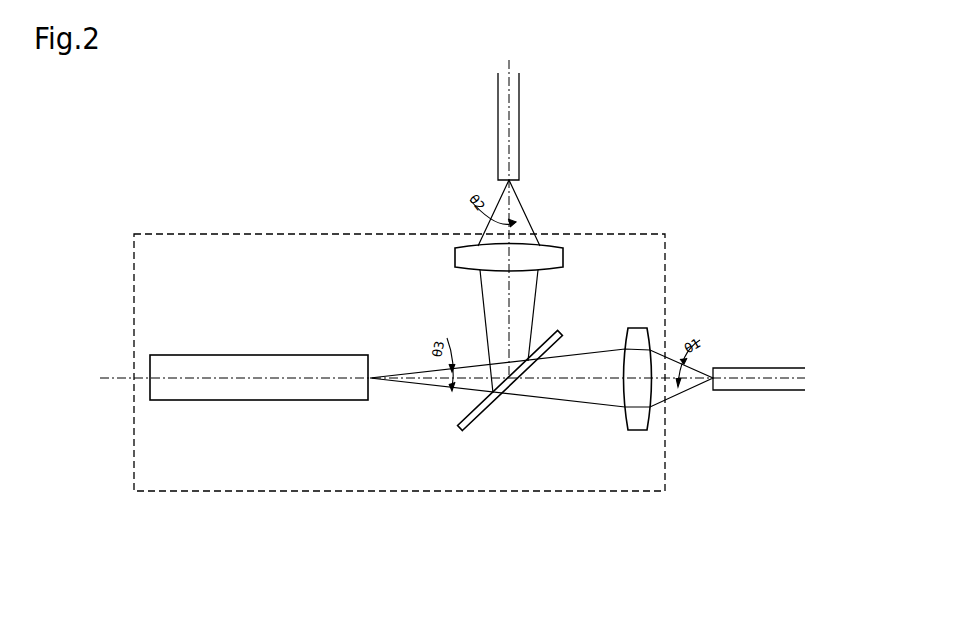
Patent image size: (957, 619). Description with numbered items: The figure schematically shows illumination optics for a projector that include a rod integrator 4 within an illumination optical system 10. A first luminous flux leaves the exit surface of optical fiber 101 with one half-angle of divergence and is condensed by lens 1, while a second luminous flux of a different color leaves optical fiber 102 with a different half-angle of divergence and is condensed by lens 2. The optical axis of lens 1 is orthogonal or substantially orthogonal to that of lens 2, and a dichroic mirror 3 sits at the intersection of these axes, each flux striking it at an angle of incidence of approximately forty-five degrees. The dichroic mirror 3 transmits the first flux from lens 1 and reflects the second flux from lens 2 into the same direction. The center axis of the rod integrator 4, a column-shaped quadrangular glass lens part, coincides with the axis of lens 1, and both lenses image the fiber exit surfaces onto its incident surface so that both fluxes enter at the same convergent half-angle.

The lens 1 is at (643, 430).
The lens 2 is at (560, 247).
The dichroic mirror 3 is at (468, 428).
The rod integrator 4 is at (260, 355).
The illumination optical system 10 is at (396, 234).
The optical fiber 101 is at (767, 368).
The optical fiber 102 is at (519, 105).